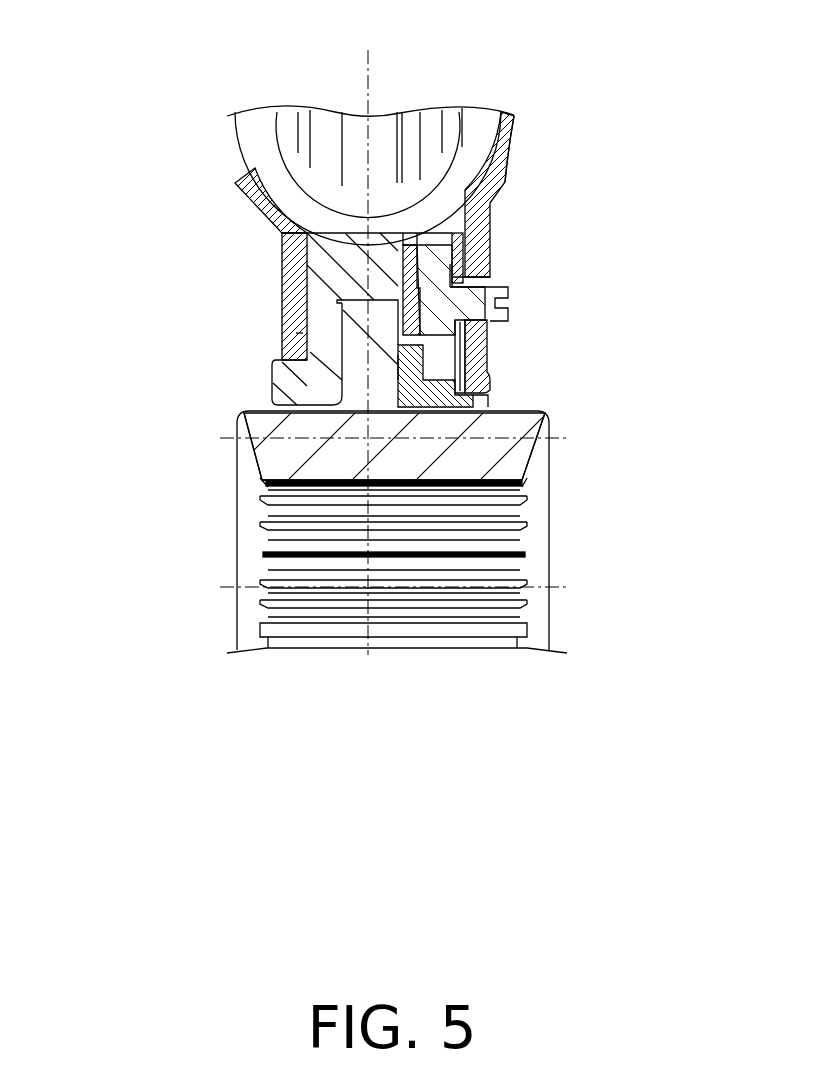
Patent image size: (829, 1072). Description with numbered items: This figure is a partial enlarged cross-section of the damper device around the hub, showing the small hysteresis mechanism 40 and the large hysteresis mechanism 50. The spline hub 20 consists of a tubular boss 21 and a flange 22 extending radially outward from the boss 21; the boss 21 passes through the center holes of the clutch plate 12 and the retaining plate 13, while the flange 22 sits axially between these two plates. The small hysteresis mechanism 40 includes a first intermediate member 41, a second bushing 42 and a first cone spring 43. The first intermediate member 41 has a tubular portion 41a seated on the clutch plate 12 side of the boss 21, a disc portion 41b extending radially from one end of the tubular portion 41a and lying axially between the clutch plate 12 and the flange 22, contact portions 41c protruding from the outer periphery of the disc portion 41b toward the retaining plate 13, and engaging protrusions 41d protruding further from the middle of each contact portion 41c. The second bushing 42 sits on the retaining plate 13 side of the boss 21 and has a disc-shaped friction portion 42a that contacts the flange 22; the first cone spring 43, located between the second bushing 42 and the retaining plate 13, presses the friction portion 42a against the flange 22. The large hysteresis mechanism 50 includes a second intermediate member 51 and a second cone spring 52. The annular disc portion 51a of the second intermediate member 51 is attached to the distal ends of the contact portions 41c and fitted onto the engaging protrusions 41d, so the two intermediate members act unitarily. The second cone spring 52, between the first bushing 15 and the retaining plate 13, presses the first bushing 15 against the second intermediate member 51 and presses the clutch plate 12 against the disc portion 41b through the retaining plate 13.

The clutch plate 12 is at (250, 189).
The retaining plate 13 is at (498, 176).
The first bushing 15 is at (478, 215).
The spline hub 20 is at (385, 493).
The boss 21 is at (507, 462).
The flange 22 is at (303, 333).
The small hysteresis mechanism 40 is at (316, 408).
The first intermediate member 41 is at (304, 265).
The tubular portion 41a is at (287, 378).
The disc portion 41b is at (322, 319).
The contact portion 41c is at (310, 107).
The engaging protrusion 41d is at (438, 228).
The second bushing 42 is at (431, 359).
The friction portion 42a is at (398, 366).
The first cone spring 43 is at (466, 360).
The large hysteresis mechanism 50 is at (542, 193).
The second intermediate member 51 is at (427, 293).
The disc portion 51a is at (492, 303).
The second cone spring 52 is at (468, 246).